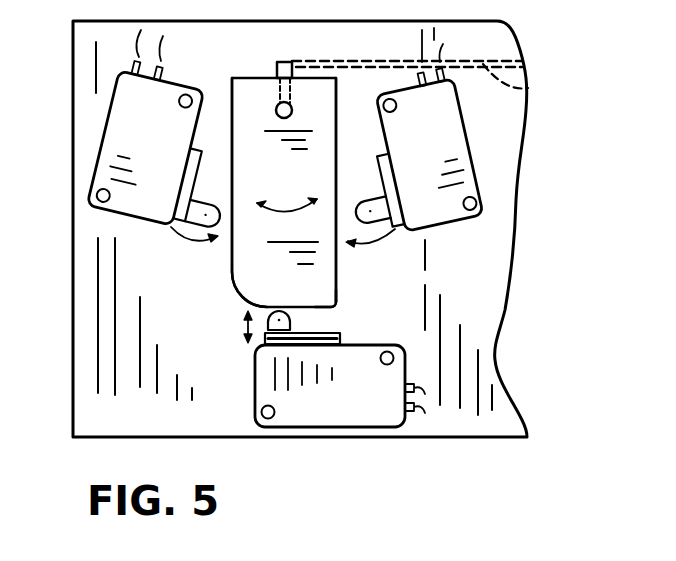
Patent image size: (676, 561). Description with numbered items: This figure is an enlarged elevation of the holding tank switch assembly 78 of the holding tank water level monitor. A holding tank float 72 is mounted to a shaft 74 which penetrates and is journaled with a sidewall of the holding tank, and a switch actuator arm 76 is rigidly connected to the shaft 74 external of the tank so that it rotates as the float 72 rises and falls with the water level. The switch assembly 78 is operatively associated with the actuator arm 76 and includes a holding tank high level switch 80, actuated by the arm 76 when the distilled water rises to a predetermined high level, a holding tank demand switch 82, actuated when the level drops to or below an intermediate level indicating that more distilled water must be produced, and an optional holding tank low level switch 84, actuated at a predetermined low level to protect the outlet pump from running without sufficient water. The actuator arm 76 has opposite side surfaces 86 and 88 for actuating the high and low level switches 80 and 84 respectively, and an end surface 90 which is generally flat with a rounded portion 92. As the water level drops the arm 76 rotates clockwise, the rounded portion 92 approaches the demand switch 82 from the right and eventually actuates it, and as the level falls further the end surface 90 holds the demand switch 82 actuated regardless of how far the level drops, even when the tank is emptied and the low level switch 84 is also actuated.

The holding tank float 72 is at (529, 88).
The shaft 74 is at (278, 112).
The switch actuator arm 76 is at (237, 104).
The holding tank switch assembly 78 is at (547, 61).
The holding tank high level switch 80 is at (471, 163).
The holding tank demand switch 82 is at (322, 407).
The holding tank low level switch 84 is at (92, 174).
The side surface 86 is at (338, 262).
The side surface 88 is at (235, 251).
The end surface 90 is at (323, 308).
The rounded portion 92 is at (245, 300).